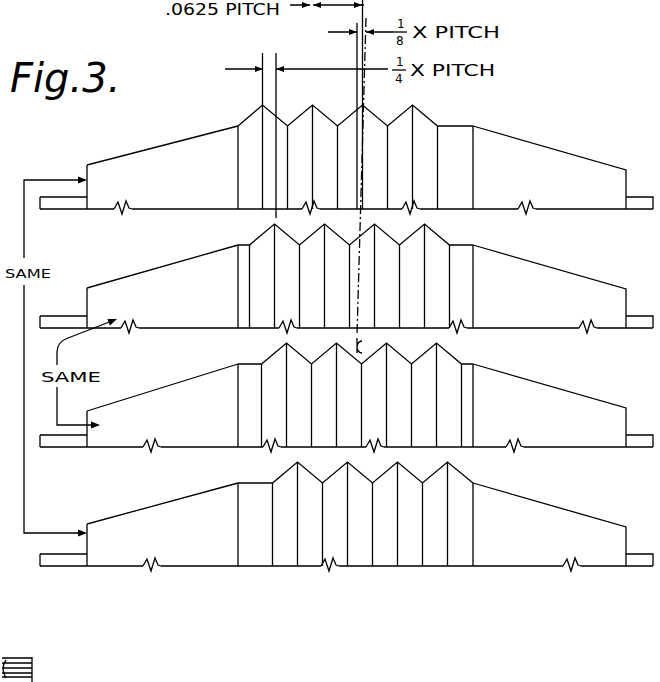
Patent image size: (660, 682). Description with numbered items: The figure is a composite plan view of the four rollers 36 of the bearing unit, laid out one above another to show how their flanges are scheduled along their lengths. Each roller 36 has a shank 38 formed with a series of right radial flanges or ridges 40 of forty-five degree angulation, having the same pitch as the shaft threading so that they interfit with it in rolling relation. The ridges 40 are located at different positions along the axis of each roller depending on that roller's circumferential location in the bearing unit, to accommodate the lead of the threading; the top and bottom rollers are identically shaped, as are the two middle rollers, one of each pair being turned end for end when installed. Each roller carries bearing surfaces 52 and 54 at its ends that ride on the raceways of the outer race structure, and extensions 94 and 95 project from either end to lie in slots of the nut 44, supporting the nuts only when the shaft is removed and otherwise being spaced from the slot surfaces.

The roller 36 is at (570, 146).
The shank 38 is at (455, 147).
The radial flanges or ridges 40 is at (248, 125).
The nut 44 is at (40, 671).
The bearing surface 52 is at (562, 530).
The bearing surface 54 is at (186, 517).
The roller extension 94 is at (642, 200).
The roller extension 95 is at (65, 203).